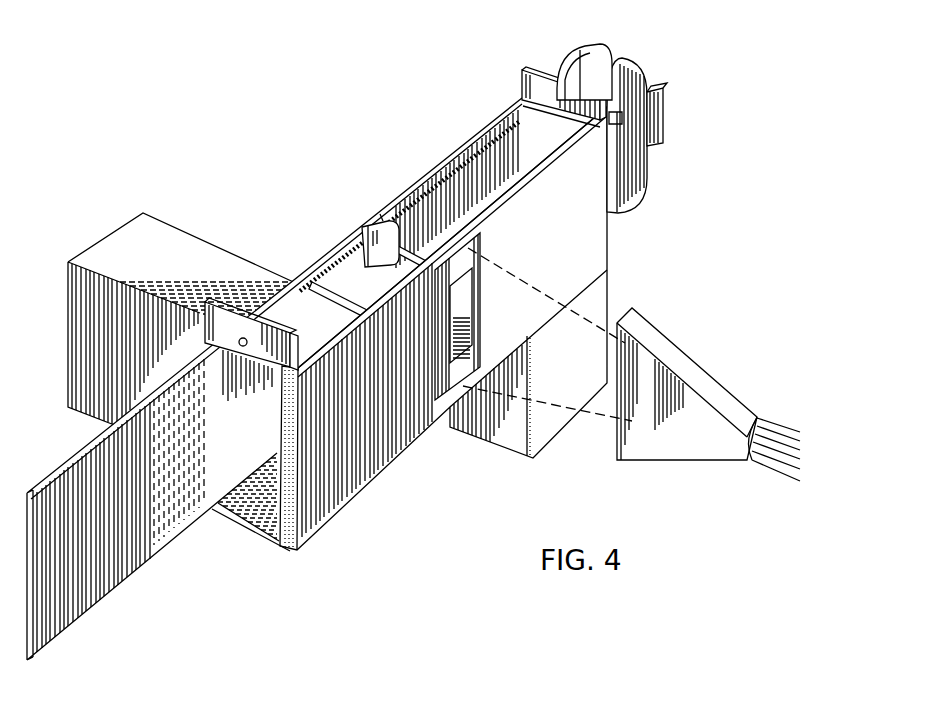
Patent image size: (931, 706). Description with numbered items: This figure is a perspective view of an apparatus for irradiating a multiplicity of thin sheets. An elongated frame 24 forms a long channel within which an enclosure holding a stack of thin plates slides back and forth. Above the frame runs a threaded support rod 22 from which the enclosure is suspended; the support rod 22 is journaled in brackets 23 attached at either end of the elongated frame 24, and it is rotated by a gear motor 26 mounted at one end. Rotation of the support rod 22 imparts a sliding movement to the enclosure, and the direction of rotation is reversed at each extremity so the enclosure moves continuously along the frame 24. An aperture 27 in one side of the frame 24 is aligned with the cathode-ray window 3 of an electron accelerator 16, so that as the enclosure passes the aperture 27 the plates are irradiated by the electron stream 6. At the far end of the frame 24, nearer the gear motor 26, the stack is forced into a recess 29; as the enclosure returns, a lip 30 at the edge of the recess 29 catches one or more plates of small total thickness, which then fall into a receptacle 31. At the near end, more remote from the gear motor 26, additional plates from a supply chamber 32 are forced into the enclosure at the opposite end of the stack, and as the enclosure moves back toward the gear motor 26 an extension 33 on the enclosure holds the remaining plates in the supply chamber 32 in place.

The cathode-ray window 3 is at (616, 438).
The electron stream 6 is at (547, 297).
The electron accelerator 16 is at (734, 383).
The support rod 22 is at (388, 222).
The brackets 23 is at (205, 338).
The elongated frame 24 is at (299, 547).
The gear motor 26 is at (648, 176).
The aperture 27 is at (473, 332).
The recess 29 is at (580, 142).
The lip 30 is at (525, 185).
The receptacle 31 is at (608, 294).
The supply chamber 32 is at (137, 232).
The extension 33 is at (55, 636).